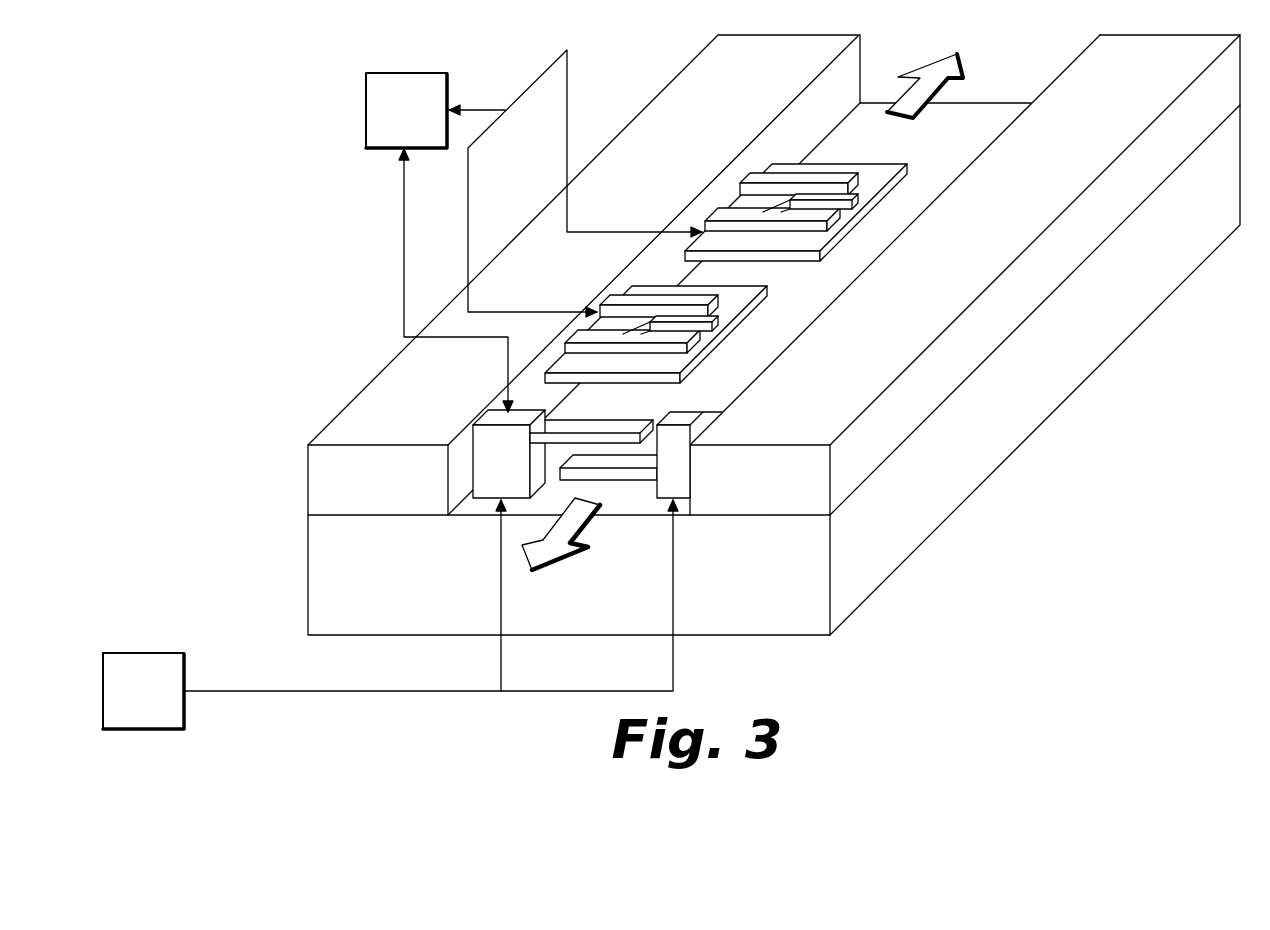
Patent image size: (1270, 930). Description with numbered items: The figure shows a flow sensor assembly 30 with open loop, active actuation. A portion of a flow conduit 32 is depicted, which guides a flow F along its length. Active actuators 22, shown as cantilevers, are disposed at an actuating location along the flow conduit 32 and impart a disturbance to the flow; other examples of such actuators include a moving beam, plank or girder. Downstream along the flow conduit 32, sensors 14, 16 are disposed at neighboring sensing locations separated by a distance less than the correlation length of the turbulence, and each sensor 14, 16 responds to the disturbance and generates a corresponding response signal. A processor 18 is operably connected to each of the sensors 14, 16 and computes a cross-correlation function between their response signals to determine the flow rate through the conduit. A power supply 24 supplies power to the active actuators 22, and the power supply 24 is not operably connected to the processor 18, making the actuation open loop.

The flow sensor assembly 30 is at (284, 60).
The flow conduit 32 is at (990, 102).
The sensor 14 is at (637, 295).
The sensor 16 is at (790, 178).
The active actuator 22 is at (492, 440).
The processor 18 is at (392, 124).
The power supply 24 is at (158, 703).